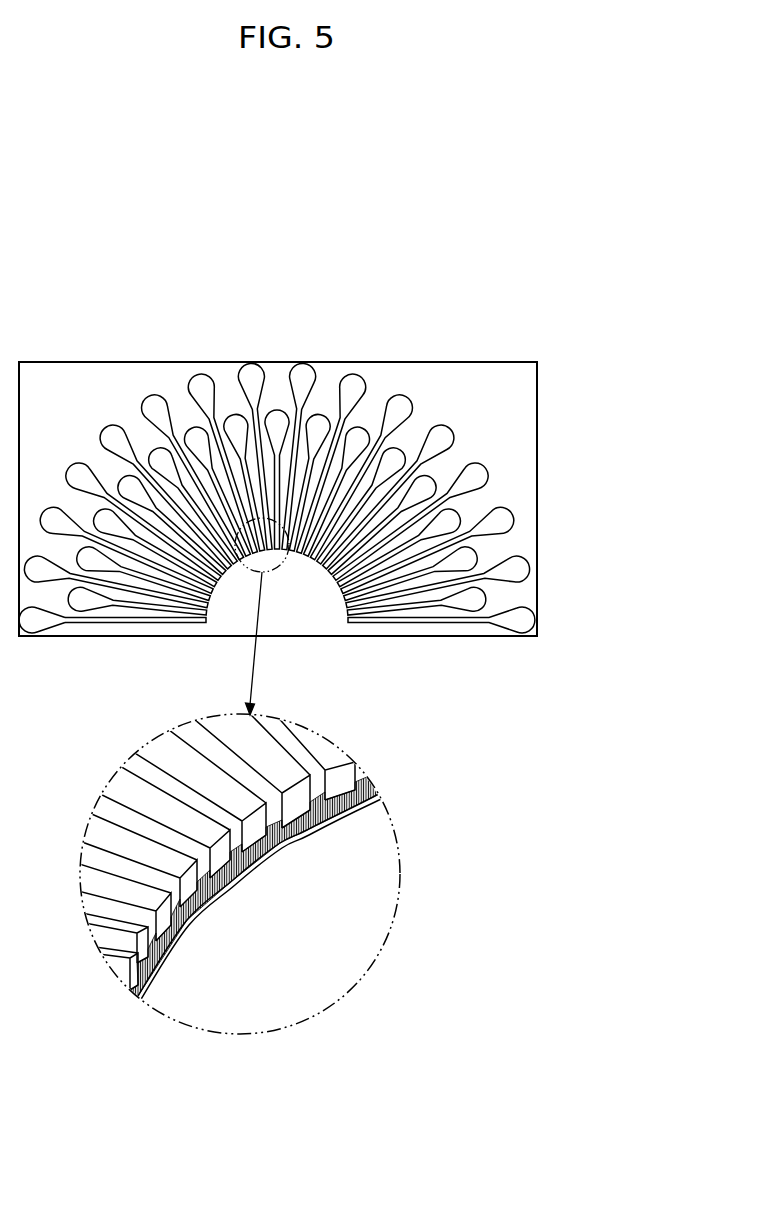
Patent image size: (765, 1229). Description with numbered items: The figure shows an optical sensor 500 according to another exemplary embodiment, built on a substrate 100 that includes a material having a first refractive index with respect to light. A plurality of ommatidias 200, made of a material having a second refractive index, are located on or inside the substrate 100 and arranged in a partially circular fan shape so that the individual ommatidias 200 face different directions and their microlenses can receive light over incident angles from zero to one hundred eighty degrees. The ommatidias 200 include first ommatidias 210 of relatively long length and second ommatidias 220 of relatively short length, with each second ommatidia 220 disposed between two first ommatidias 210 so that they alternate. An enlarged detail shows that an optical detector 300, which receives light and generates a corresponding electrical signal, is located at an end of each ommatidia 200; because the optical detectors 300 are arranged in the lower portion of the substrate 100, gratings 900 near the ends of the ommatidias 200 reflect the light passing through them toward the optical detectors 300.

The optical sensor 500 is at (366, 300).
The substrate 100 is at (532, 420).
The ommatidias 200 is at (504, 630).
The first ommatidias 210 is at (40, 634).
The second ommatidias 220 is at (100, 634).
The gratings 900 is at (353, 808).
The optical detectors 300 is at (303, 835).